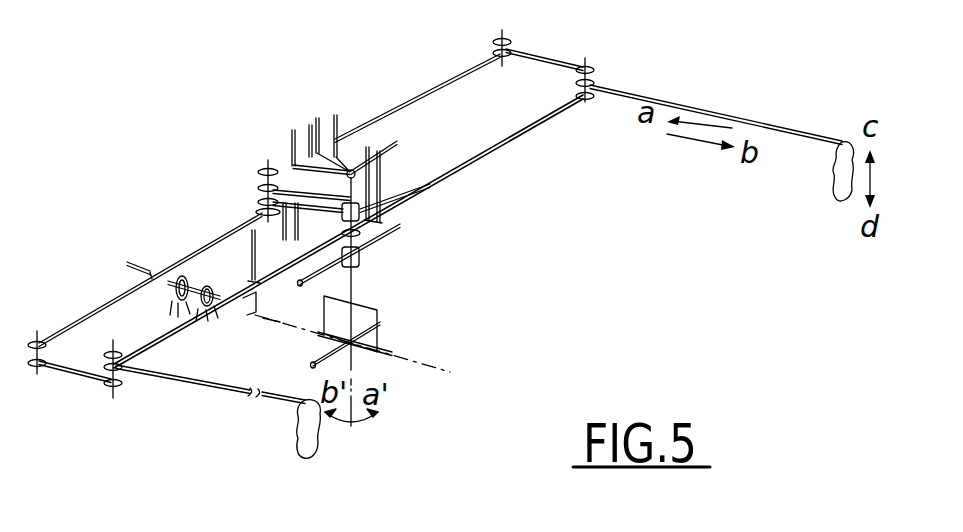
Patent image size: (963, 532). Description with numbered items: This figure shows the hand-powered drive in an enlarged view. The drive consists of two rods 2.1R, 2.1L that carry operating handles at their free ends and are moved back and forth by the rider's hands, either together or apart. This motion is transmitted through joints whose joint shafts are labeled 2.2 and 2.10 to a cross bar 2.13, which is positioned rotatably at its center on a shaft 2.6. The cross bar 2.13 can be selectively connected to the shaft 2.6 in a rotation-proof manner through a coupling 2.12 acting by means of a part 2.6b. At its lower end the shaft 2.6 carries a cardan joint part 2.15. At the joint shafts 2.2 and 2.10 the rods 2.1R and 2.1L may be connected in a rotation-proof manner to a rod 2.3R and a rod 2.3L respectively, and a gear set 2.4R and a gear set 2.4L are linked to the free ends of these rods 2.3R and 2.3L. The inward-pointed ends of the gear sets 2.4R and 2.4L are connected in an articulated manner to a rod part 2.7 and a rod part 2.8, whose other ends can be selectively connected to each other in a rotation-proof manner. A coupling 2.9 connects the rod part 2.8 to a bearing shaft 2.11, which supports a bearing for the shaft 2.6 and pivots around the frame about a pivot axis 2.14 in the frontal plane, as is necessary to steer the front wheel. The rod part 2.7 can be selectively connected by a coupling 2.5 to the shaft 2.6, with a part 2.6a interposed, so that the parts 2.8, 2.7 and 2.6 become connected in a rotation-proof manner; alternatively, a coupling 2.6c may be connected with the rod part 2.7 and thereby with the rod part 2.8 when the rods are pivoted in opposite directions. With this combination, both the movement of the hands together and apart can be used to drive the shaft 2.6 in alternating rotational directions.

The rod 2.1R is at (662, 100).
The rod 2.1L is at (239, 394).
The joint shaft 2.2 is at (593, 60).
The rod 2.3R is at (542, 58).
The rod 2.3L is at (88, 378).
The gear set 2.4R is at (453, 67).
The gear set 2.4L is at (223, 245).
The coupling 2.5 is at (314, 128).
The shaft 2.6 is at (356, 279).
The part 2.6a is at (336, 146).
The part 2.6b is at (405, 146).
The coupling 2.6c is at (294, 132).
The rod part 2.7 is at (270, 165).
The rod part 2.8 is at (260, 189).
The coupling 2.9 is at (258, 214).
The joint shaft 2.10 is at (142, 334).
The bearing shaft 2.11 is at (393, 228).
The coupling 2.12 is at (420, 191).
The cross bar 2.13 is at (523, 135).
The pivot axis 2.14 is at (438, 372).
The cardan joint part 2.15 is at (380, 320).